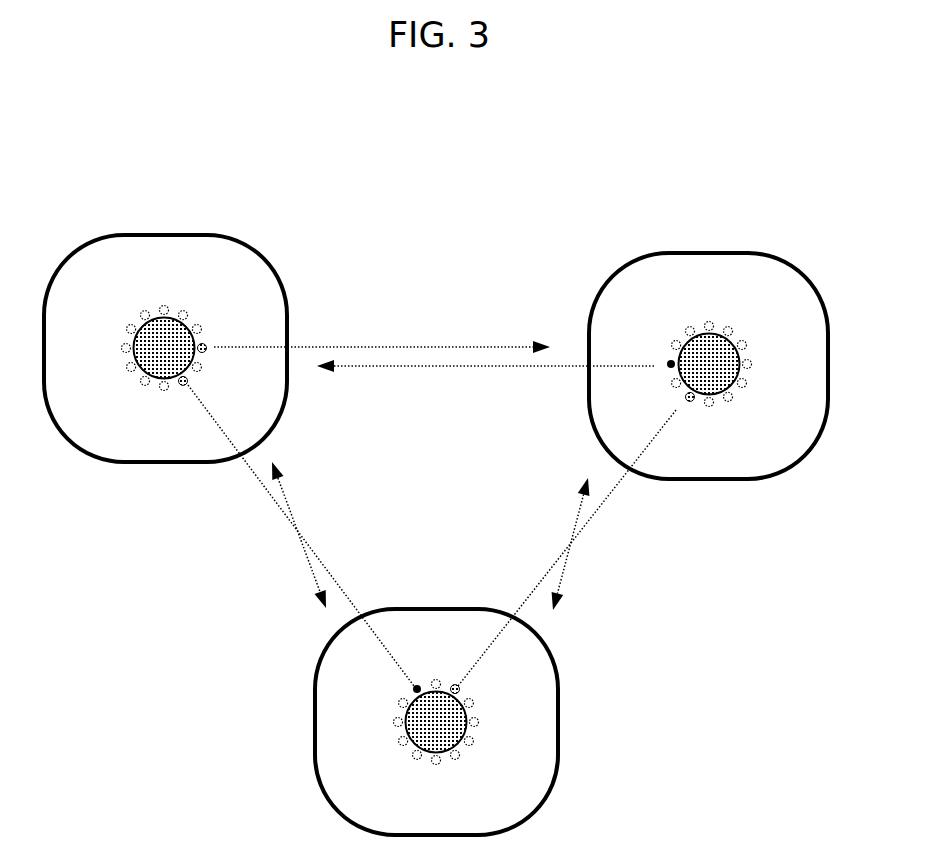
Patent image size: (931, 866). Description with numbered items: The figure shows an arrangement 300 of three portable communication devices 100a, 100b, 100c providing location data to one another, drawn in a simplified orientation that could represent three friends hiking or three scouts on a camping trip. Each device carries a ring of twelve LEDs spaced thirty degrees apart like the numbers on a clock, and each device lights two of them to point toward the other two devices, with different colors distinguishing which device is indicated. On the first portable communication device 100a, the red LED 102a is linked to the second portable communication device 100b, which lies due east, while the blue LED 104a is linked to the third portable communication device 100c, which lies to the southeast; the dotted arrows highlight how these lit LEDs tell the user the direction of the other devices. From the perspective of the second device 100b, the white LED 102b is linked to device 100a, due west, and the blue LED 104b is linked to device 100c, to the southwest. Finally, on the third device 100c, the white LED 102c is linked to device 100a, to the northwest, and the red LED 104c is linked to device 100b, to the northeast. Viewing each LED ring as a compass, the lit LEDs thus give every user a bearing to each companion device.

The system of communicating devices 300 is at (462, 89).
The portable communication device 100a is at (143, 261).
The portable communication device 100b is at (682, 280).
The portable communication device 100c is at (413, 637).
The LED 102a is at (206, 343).
The LED 104a is at (182, 385).
The LED 102b is at (668, 358).
The LED 104b is at (692, 402).
The LED 102c is at (412, 689).
The LED 104c is at (460, 691).